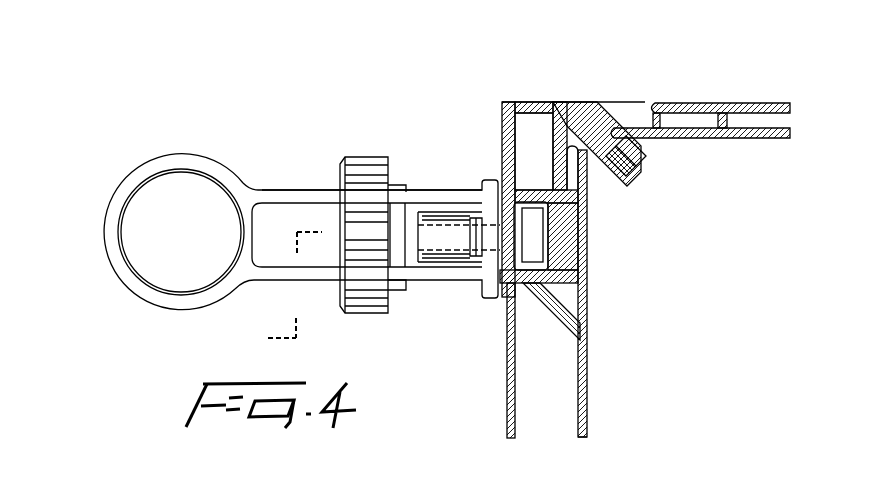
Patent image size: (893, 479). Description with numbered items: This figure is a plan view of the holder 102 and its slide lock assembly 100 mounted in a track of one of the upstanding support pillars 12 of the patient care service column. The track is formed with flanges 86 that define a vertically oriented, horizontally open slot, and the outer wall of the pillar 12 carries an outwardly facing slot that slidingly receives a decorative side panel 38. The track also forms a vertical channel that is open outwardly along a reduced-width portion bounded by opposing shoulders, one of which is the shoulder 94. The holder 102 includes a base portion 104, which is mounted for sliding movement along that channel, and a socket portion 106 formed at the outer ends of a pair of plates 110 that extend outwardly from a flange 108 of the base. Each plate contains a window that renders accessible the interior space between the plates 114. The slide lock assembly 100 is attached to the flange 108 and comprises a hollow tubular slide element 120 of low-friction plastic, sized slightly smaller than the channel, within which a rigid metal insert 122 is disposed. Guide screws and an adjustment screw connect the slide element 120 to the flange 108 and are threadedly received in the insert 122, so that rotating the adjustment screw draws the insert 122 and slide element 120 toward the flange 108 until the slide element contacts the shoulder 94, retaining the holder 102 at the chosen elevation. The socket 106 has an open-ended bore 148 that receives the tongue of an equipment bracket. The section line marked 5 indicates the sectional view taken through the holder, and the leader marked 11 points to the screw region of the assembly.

The section line 5- 5 is at (54, 380).
The bolt head 11 is at (470, 215).
The support pillar 12 is at (615, 100).
The decorative side panel 38 is at (698, 104).
The flanges 86 is at (503, 320).
The shoulder 94 is at (486, 283).
The slide lock assembly 100 is at (510, 196).
The holder 102 is at (258, 188).
The base portion 104 is at (420, 287).
The socket portion 106 is at (98, 230).
The flange 108 is at (482, 298).
The plates 110 is at (292, 191).
The interior space between the plates 114 is at (318, 253).
The slide element 120 is at (588, 298).
The insert 122 is at (540, 236).
The bore 148 is at (150, 178).